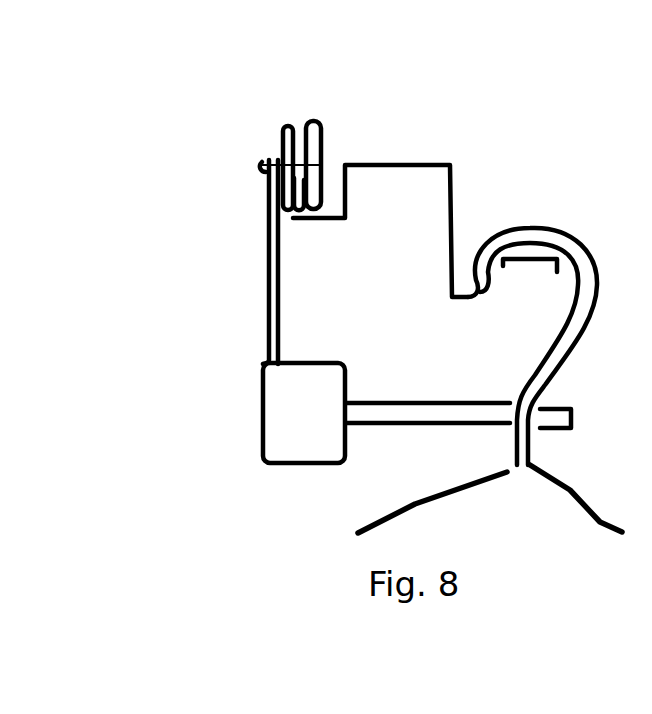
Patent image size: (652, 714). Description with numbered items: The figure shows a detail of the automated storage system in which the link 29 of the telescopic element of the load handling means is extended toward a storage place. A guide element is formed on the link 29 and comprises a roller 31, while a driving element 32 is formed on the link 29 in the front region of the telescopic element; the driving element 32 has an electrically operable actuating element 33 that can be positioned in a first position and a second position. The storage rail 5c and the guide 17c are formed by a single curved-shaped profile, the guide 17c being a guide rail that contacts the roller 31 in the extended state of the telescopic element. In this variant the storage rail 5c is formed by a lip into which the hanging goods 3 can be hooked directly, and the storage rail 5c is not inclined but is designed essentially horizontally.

The link 29 is at (246, 385).
The roller 31 is at (303, 153).
The guide 17c is at (295, 206).
The storage rail 5c is at (533, 259).
The driving element 32 is at (326, 475).
The actuating element 33 is at (402, 412).
The hanging goods 3 is at (482, 511).